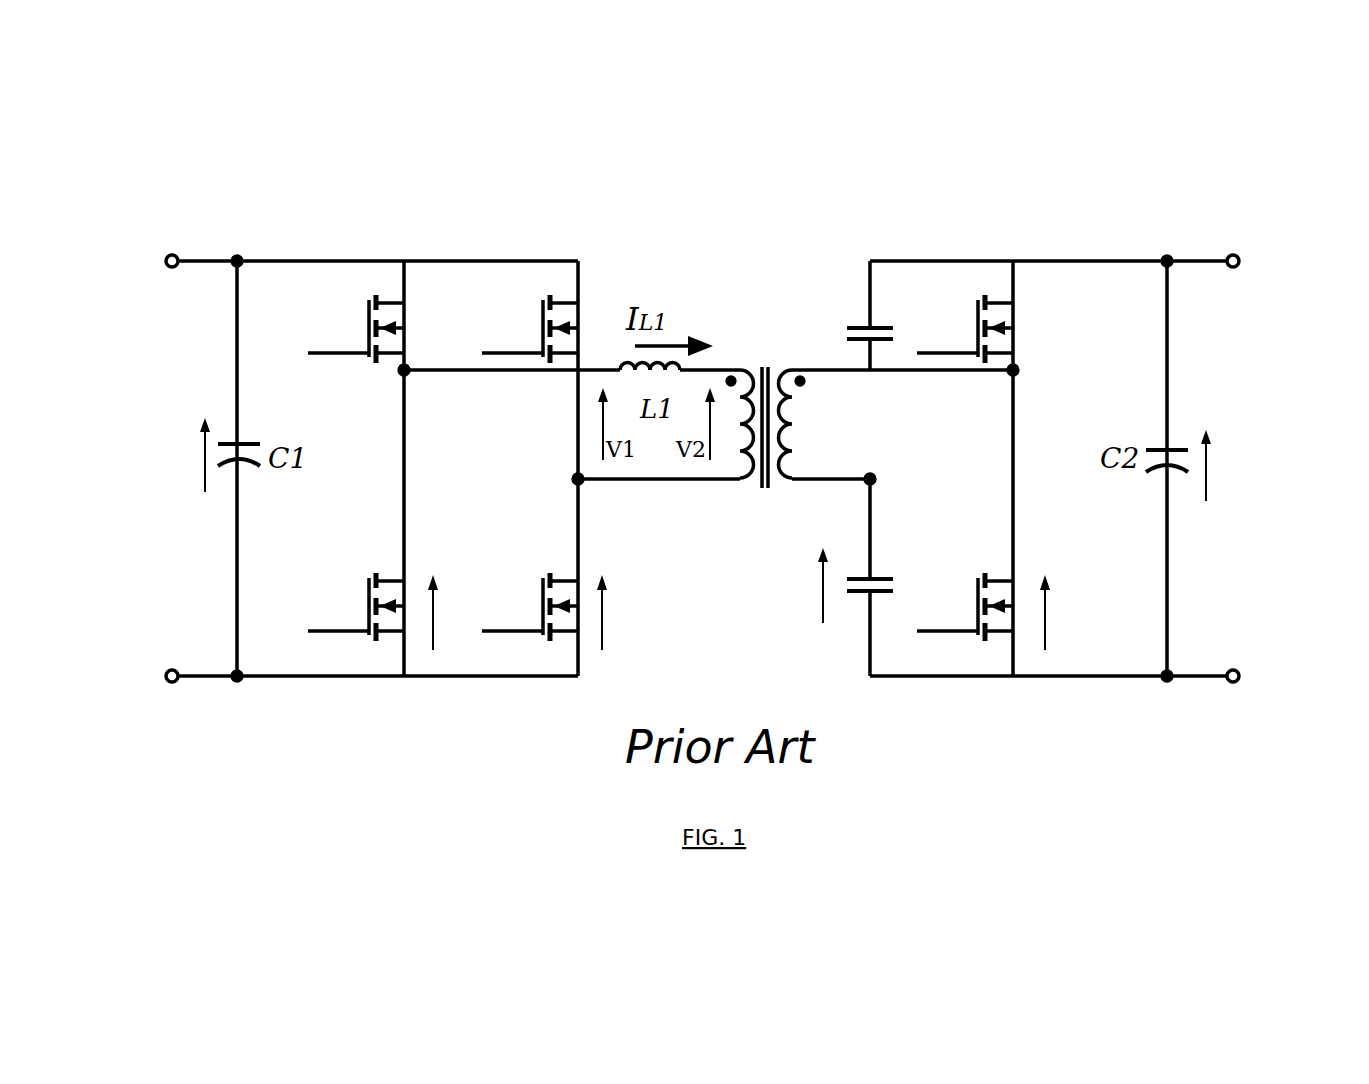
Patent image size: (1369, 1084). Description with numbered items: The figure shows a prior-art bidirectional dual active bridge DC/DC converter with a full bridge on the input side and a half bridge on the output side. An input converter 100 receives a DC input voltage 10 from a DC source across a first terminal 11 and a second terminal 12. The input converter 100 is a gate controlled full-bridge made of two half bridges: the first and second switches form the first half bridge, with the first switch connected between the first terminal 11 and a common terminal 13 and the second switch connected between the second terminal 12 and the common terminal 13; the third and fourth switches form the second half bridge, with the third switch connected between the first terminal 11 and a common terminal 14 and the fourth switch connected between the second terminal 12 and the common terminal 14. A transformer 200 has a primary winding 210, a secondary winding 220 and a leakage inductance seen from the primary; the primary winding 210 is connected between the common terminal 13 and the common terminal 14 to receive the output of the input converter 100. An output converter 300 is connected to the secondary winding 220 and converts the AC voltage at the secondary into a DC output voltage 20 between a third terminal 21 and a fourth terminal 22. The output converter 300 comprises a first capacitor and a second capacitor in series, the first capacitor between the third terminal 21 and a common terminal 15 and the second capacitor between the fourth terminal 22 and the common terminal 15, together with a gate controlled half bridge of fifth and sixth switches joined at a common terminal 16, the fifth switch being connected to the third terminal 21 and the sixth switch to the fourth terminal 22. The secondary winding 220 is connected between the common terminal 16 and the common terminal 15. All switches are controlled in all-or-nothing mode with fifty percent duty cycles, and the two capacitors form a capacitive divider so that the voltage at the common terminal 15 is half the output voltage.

The DC input voltage 10 is at (167, 660).
The first terminal 11 is at (197, 233).
The second terminal 12 is at (197, 704).
The common terminal between the first switch and the second switch 13 is at (482, 393).
The common terminal between the third switch and the fourth switch 14 is at (628, 489).
The common terminal between the first capacitor and the second capacitor 15 is at (858, 489).
The common terminal between the fifth switch and the sixth switch 16 is at (928, 381).
The DC output voltage 20 is at (1250, 650).
The third terminal 21 is at (1209, 233).
The fourth terminal 22 is at (1209, 704).
The input converter 100 is at (385, 243).
The transformer 200 is at (755, 306).
The primary winding 210 is at (715, 451).
The secondary winding 220 is at (810, 451).
The output converter 300 is at (1046, 243).